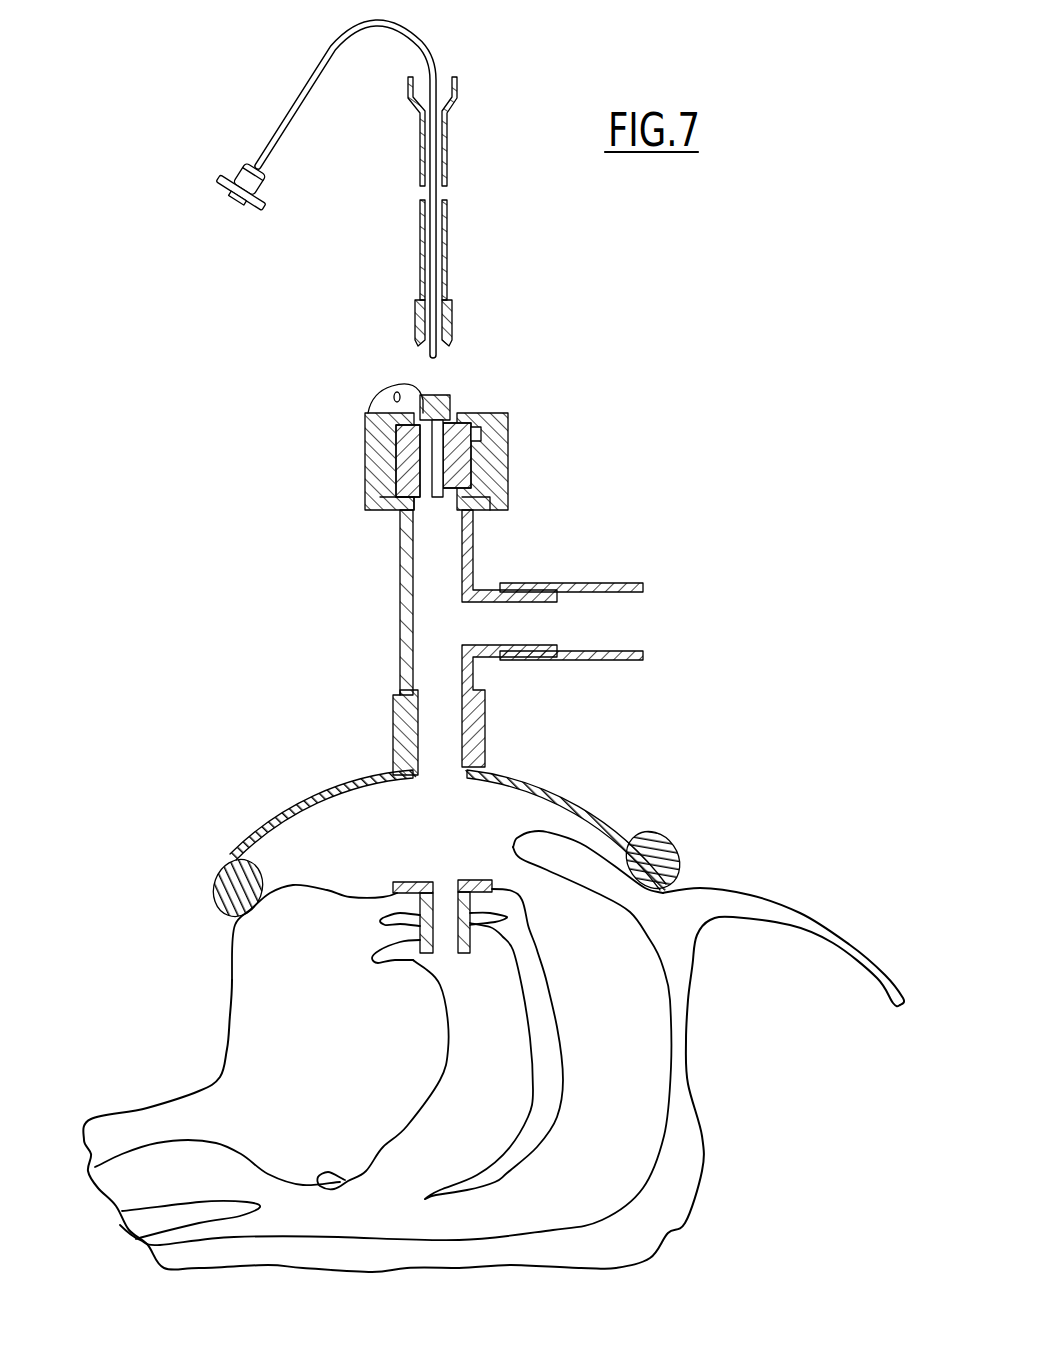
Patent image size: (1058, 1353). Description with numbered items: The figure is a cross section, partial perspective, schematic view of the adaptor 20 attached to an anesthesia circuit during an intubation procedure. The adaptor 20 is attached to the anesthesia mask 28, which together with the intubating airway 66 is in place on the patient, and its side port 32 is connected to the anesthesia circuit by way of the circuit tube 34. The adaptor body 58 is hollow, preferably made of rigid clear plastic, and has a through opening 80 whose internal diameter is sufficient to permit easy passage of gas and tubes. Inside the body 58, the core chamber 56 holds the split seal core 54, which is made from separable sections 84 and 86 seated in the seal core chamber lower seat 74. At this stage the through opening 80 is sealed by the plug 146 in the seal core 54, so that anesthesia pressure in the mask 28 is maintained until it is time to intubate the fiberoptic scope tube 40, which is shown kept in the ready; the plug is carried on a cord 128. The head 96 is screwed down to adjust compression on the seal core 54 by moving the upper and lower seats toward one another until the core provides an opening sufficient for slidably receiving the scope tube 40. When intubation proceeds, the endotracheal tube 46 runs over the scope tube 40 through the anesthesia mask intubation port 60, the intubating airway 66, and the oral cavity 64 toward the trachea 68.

The adaptor 20 is at (462, 443).
The anesthesia mask 28 is at (603, 810).
The side port 32 is at (480, 590).
The circuit tube 34 is at (620, 583).
The fiberoptic scope tube 40 is at (428, 48).
The endotracheal tube 46 is at (448, 272).
The seal core 54 is at (472, 440).
The core chamber 56 is at (370, 420).
The adaptor body 58 is at (398, 602).
The anesthesia mask intubation port 60 is at (473, 747).
The oral cavity 64 is at (487, 1058).
The intubating airway 66 is at (413, 893).
The trachea 68 is at (190, 1160).
The seal core chamber lower seat 74 is at (470, 500).
The through opening 80 is at (400, 503).
The separable section 84 is at (380, 450).
The separable section 86 is at (492, 466).
The head 96 is at (503, 412).
The cord 128 is at (387, 379).
The plug 146 is at (447, 400).